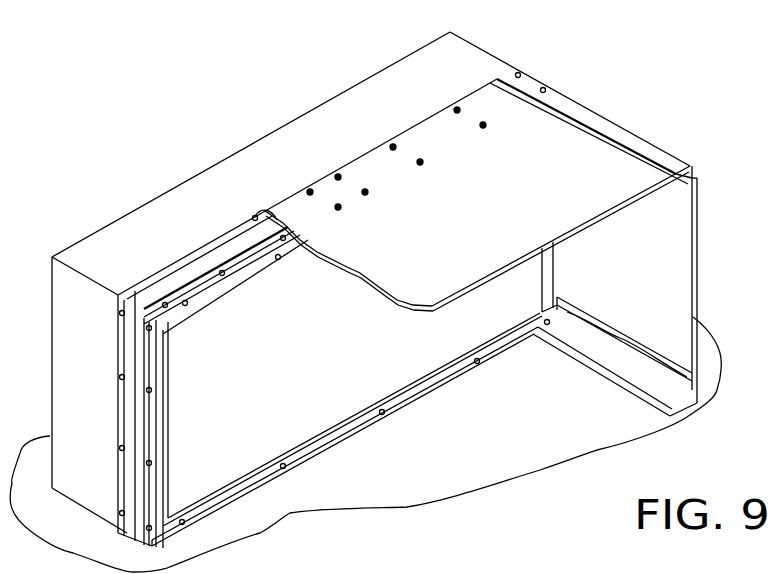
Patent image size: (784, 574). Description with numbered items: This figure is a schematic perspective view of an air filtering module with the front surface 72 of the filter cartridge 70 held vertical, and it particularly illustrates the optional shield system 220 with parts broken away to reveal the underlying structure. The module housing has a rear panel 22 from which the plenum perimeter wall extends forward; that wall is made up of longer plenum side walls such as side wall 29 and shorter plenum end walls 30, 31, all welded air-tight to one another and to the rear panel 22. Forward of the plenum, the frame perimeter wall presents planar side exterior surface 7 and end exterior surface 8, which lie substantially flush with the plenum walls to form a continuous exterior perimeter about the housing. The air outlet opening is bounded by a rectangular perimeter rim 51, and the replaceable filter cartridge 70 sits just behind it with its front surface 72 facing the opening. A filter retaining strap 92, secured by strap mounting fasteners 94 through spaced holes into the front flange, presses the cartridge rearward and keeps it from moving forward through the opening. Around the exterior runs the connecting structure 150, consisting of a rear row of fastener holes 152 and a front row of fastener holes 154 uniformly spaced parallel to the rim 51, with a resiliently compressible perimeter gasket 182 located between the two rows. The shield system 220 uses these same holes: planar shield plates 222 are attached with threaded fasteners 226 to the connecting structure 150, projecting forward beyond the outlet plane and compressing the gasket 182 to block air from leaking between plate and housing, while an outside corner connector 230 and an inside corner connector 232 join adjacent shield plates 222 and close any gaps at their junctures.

The side exterior surface 7 is at (257, 213).
The end exterior surface 8 is at (118, 333).
The rear panel 22 is at (274, 131).
The plenum side wall 29 is at (343, 129).
The plenum end wall 30 is at (70, 394).
The plenum end wall 31 is at (485, 50).
The perimeter rim 51 is at (157, 470).
The filter cartridge 70 is at (317, 423).
The front surface 72 is at (216, 428).
The filter retaining strap 92 is at (197, 305).
The strap mounting fasteners 94 is at (277, 257).
The connecting structure 150 is at (160, 272).
The rear row of fastener holes 152 is at (193, 257).
The front row of fastener holes 154 is at (227, 280).
The perimeter gasket 182 is at (238, 240).
The shield system 220 is at (702, 253).
The shield plates 222 is at (355, 268).
The threaded fasteners 226 is at (460, 106).
The outside corner connector 230 is at (620, 127).
The inside corner connector 232 is at (615, 382).